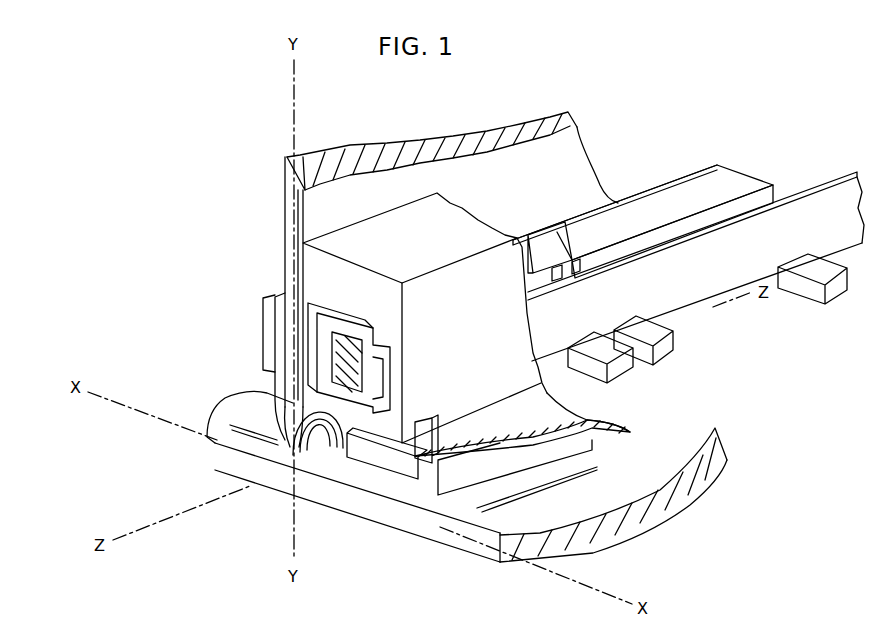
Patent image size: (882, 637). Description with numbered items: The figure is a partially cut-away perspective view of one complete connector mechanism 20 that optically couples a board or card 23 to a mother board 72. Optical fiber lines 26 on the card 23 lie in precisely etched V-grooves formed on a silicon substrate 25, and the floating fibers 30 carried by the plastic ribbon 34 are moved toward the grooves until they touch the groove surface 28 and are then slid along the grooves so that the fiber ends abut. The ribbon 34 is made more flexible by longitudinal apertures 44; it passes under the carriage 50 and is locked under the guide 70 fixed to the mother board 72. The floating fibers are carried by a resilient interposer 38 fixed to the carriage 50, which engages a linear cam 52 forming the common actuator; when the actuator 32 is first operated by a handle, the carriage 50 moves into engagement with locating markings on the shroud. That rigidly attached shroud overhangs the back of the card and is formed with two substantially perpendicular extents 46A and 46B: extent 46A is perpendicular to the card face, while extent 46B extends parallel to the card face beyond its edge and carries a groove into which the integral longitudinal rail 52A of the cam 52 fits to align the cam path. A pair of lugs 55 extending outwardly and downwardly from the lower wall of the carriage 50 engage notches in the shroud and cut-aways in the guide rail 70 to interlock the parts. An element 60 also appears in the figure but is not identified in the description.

The connector mechanism 20 is at (243, 218).
The board or card 23 is at (510, 125).
The substrate 25 is at (575, 152).
The optical fiber lines 26 is at (303, 307).
The surface in the grooves 28 is at (298, 365).
The floating fibers 30 is at (277, 317).
The actuator 32 is at (396, 364).
The plastic ribbon 34 is at (277, 454).
The resilient interposer 38 is at (263, 328).
The longitudinal apertures 44 is at (334, 444).
The shroud extent 46A is at (423, 250).
The shroud extent 46B is at (479, 317).
The carriage 50 is at (568, 238).
The linear cam 52 is at (377, 381).
The longitudinal rail 52A is at (701, 274).
The lugs 55 is at (663, 353).
The latch block 60 is at (375, 477).
The guide 70 is at (483, 473).
The mother board 72 is at (606, 498).